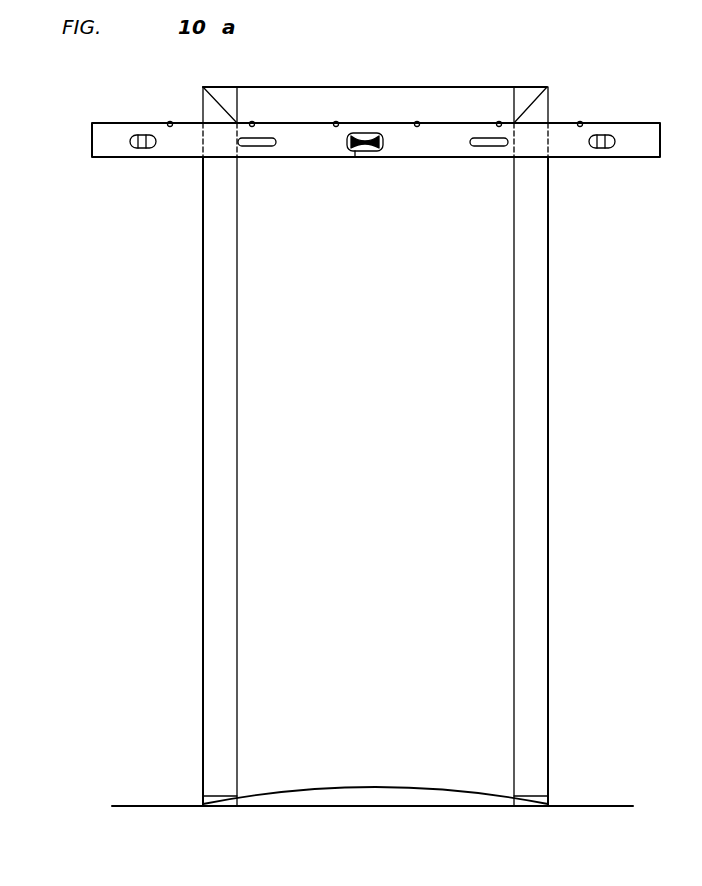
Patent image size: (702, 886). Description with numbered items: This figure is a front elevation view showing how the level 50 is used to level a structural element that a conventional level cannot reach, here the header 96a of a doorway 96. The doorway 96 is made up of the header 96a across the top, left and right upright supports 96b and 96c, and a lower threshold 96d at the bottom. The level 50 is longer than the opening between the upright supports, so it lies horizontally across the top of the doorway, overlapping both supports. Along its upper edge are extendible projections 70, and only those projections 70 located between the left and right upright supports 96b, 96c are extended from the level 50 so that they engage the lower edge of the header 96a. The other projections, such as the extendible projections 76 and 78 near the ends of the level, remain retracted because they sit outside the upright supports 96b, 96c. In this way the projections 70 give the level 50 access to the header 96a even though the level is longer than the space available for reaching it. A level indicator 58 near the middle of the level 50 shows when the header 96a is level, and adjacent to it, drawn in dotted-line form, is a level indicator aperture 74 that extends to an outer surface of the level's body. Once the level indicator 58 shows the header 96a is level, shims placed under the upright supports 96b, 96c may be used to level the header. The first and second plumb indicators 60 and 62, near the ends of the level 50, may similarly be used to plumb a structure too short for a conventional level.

The level 50 is at (376, 153).
The level indicator 58 is at (375, 152).
The first plumb indicator 60 is at (143, 148).
The second plumb indicator 62 is at (604, 148).
The extendible projections 70 is at (254, 121).
The level indicator aperture 74 is at (355, 157).
The extendible projection 76 is at (170, 121).
The extendible projection 78 is at (580, 121).
The doorway 96 is at (328, 455).
The header 96a is at (243, 92).
The left upright support 96b is at (218, 282).
The right upright support 96c is at (533, 326).
The lower threshold 96d is at (345, 788).